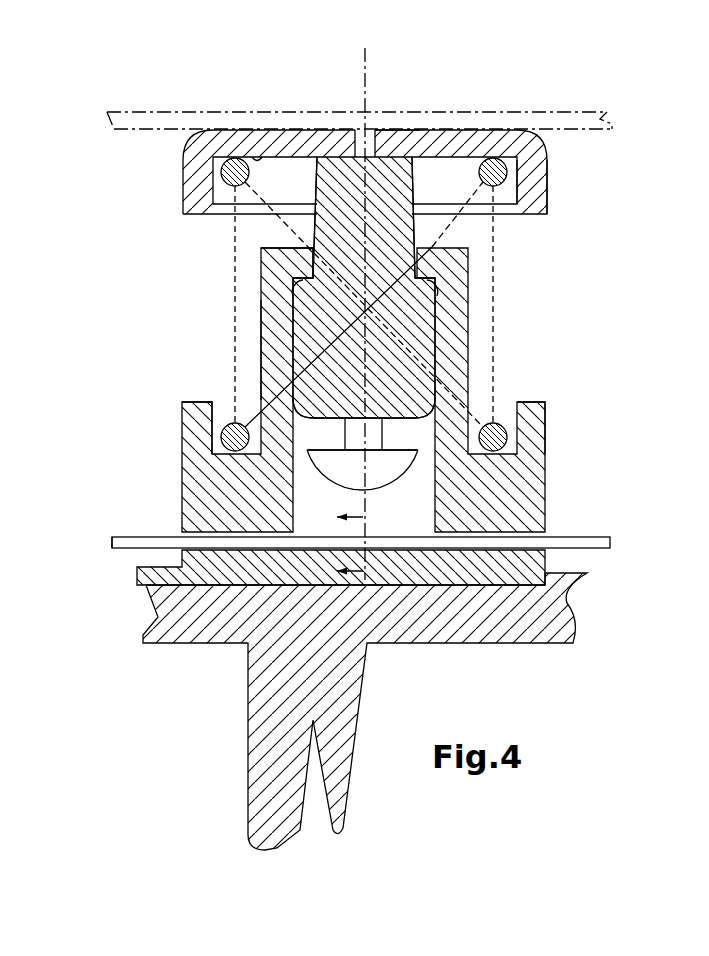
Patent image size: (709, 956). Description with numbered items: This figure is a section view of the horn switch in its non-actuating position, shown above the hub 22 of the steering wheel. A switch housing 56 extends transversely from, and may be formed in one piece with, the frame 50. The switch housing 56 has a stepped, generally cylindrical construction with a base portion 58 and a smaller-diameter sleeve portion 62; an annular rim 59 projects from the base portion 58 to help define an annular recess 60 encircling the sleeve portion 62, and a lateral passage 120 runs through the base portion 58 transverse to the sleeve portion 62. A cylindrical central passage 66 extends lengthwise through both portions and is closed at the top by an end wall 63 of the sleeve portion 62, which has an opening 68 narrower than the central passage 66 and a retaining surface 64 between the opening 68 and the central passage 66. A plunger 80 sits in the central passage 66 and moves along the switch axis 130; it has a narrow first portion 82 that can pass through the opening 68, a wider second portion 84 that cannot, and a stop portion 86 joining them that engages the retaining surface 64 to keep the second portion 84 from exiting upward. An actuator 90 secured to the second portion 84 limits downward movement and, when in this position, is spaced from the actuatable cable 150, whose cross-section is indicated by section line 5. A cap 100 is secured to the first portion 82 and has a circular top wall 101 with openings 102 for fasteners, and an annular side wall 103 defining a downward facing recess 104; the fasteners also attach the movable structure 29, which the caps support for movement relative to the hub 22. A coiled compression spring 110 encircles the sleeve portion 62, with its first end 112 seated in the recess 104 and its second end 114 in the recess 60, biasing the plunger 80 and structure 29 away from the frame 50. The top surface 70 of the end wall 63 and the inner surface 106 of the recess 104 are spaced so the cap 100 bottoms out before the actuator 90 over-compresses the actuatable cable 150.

The section line 5- 5 is at (339, 543).
The hub 22 is at (530, 618).
The movable structure 29 is at (590, 112).
The frame 50 is at (525, 573).
The switch housing 56 is at (384, 378).
The base portion 58 is at (190, 483).
The annular rim 59 is at (535, 415).
The annular recess 60 is at (215, 415).
The sleeve portion 62 is at (260, 307).
The end wall 63 is at (420, 298).
The retaining surface 64 is at (262, 248).
The central passage 66 is at (395, 508).
The opening 68 is at (432, 247).
The top surface 70 is at (290, 285).
The plunger 80 is at (452, 247).
The first portion 82 is at (338, 170).
The second portion 84 is at (402, 402).
The stop portion 86 is at (448, 268).
The actuator 90 is at (350, 468).
The cap 100 is at (408, 122).
The top wall 101 is at (352, 148).
The openings 102 is at (371, 130).
The annular side wall 103 is at (528, 197).
The recess 104 is at (297, 190).
The inner surface 106 is at (257, 157).
The coiled compression spring 110 is at (495, 313).
The first end 112 is at (507, 170).
The second end 114 is at (505, 442).
The lateral passage 120 is at (548, 533).
The switch axis 130 is at (367, 63).
The actuatable cable 150 is at (120, 549).